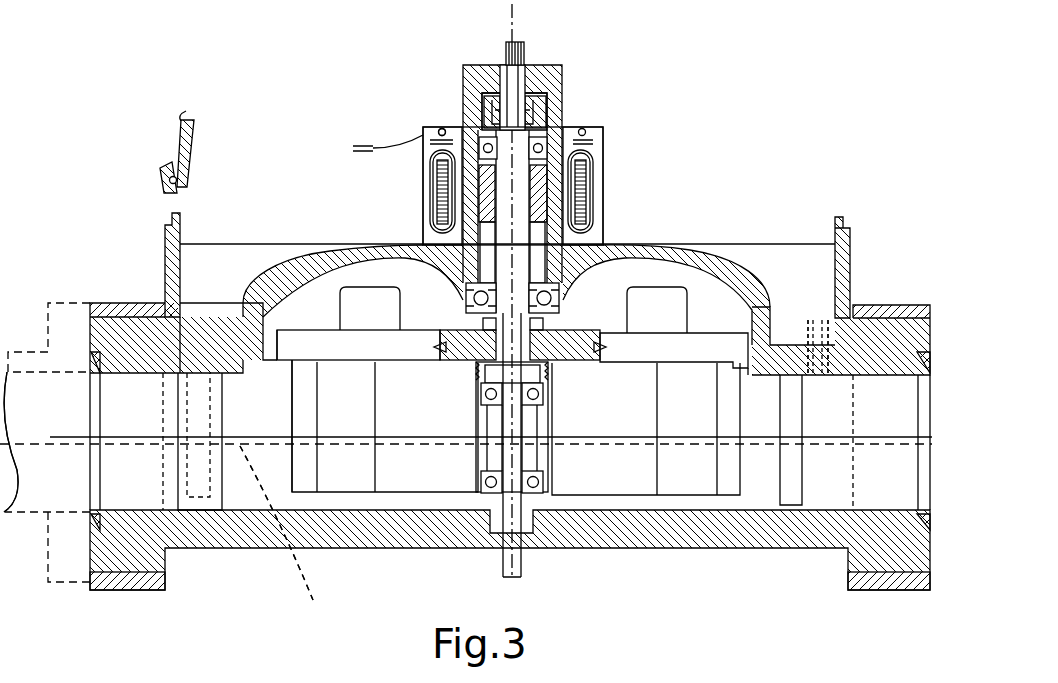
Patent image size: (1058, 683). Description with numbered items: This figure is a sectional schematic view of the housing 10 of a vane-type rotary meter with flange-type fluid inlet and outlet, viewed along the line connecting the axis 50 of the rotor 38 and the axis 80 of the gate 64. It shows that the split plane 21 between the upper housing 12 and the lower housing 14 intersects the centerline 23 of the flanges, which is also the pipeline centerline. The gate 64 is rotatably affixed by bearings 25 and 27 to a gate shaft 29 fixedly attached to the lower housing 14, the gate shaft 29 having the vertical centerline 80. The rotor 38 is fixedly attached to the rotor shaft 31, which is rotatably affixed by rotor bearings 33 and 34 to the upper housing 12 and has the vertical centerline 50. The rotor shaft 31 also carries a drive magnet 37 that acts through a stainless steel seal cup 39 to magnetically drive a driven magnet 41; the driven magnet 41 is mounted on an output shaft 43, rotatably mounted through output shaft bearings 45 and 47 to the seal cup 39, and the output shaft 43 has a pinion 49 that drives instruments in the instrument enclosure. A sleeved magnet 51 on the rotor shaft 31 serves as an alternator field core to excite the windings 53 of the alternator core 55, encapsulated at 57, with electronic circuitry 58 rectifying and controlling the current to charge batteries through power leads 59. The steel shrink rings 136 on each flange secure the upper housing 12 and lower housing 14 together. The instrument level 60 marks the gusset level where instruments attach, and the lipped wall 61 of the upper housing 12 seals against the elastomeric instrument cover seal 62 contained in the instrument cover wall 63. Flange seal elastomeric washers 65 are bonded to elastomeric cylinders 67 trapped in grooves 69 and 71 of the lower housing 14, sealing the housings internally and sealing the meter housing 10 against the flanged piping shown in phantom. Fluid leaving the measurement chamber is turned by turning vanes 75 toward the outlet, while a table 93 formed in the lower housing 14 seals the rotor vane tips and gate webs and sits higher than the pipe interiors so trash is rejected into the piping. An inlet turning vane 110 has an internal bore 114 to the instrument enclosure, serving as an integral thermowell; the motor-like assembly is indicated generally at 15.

The housing 10 is at (90, 330).
The upper housing 12 is at (797, 330).
The lower housing 14 is at (735, 549).
The electric motor 15 is at (592, 160).
The split plane 21 is at (128, 436).
The centerline of the flanges 23 is at (11, 442).
The bearing 25 is at (482, 394).
The bearing 27 is at (478, 483).
The gate shaft 29 is at (487, 424).
The rotor shaft 31 is at (548, 252).
The rotor bearing 33 is at (600, 298).
The rotor bearing 34 is at (587, 132).
The drive magnet 37 is at (540, 113).
The rotor 38 is at (695, 342).
The seal cup 39 is at (537, 80).
The driven magnet 41 is at (527, 100).
The output shaft 43 is at (522, 86).
The output shaft bearing 45 is at (498, 115).
The output shaft bearing 47 is at (478, 72).
The pinion 49 is at (521, 48).
The axis of the rotor 50 is at (530, 230).
The sleeved magnet 51 is at (548, 181).
The windings 53 is at (430, 215).
The alternator core 55 is at (440, 186).
The encapsulation 57 is at (425, 160).
The electronic circuitry 58 is at (422, 128).
The power leads 59 is at (423, 135).
The instrument level 60 is at (703, 246).
The lipped wall 61 is at (182, 226).
The instrument cover seal 62 is at (176, 184).
The instrument cover wall 63 is at (192, 140).
The gate 64 is at (606, 482).
The flange seal elastomeric washers 65 is at (98, 522).
The elastomeric cylinders 67 is at (238, 447).
The groove 69 is at (294, 535).
The groove 71 is at (276, 523).
The turning vanes 75 is at (802, 478).
The axis of the gate 80 is at (522, 462).
The table 93 is at (476, 486).
The turning vane 110 is at (178, 463).
The internal bore 114 is at (188, 478).
The steel shrink rings 136 is at (128, 591).